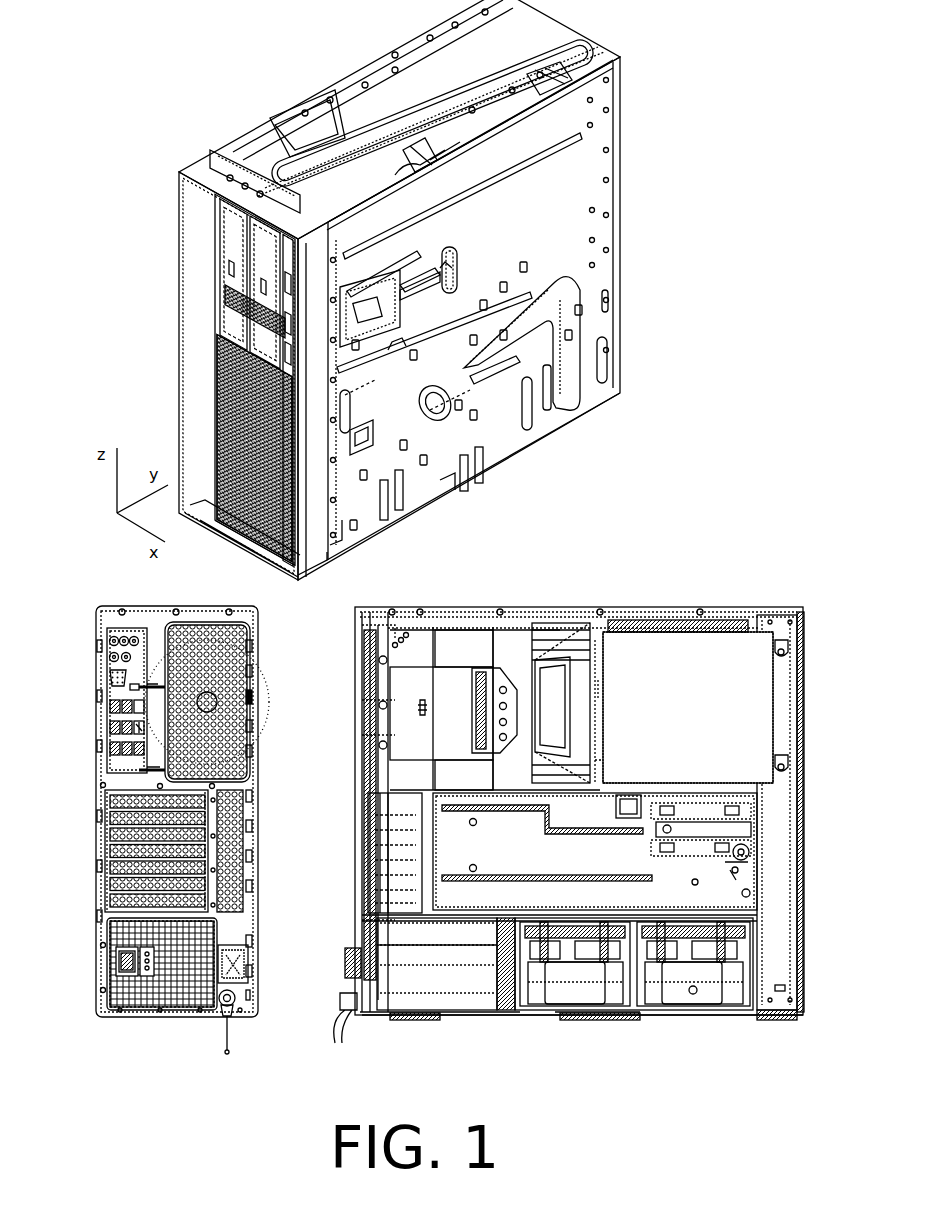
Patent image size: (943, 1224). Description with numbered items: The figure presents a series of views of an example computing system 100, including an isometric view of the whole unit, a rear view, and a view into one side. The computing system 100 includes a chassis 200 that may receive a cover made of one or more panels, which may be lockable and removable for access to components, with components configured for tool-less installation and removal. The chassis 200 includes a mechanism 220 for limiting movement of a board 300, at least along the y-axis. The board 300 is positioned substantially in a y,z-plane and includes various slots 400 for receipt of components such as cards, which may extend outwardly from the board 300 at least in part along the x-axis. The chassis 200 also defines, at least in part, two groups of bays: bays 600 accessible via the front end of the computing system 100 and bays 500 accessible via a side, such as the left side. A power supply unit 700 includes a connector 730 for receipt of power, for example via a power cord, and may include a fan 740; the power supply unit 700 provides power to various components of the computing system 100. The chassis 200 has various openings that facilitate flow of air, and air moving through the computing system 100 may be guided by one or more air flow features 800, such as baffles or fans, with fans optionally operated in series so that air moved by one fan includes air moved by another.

The computing system 100 is at (266, 56).
The chassis 200 is at (542, 458).
The mechanism 220 is at (434, 239).
The bays 600 is at (202, 301).
The slots 400 is at (96, 877).
The connector 730 is at (130, 968).
The fan 740 is at (172, 982).
The air flow features 800 is at (473, 637).
The board 300 is at (602, 627).
The power supply unit 700 is at (438, 985).
The bays 500 is at (669, 1003).